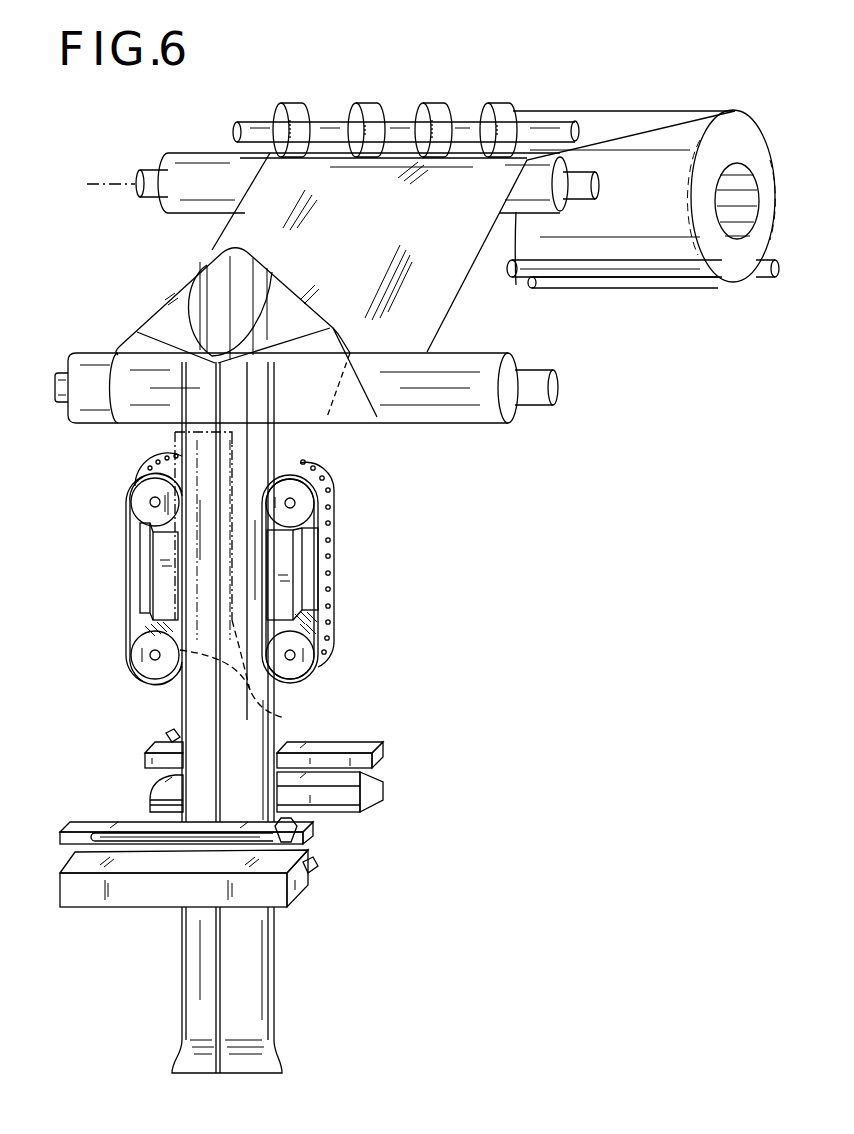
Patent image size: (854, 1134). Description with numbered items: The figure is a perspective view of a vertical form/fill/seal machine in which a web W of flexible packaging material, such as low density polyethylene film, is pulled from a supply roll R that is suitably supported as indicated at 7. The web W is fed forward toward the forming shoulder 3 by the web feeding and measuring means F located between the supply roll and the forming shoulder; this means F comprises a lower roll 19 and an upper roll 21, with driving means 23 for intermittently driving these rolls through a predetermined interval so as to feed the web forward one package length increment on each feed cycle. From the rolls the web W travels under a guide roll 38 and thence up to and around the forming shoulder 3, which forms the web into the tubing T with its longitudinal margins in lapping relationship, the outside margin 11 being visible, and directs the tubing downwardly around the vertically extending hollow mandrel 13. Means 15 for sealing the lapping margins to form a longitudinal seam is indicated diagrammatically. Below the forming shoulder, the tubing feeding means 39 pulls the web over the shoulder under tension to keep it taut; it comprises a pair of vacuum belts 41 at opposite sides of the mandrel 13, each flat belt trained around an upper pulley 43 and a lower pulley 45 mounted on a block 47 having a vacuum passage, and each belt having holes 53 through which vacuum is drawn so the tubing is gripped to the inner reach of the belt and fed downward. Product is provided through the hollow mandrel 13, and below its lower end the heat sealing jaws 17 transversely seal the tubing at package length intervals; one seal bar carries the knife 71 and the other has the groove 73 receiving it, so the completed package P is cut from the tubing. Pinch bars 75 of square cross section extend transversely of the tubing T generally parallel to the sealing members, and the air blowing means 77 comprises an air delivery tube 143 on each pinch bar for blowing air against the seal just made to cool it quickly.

The forming shoulder 3 is at (118, 340).
The supply roll support 7 is at (718, 278).
The longitudinal margin 11 is at (202, 413).
The hollow mandrel 13 is at (282, 711).
The longitudinal sealing means 15 is at (175, 436).
The heat sealing jaws 17 is at (130, 907).
The lower roll 19 is at (215, 213).
The upper roll 21 is at (274, 112).
The driving means 23 is at (129, 198).
The guide roll 38 is at (515, 423).
The tubing feeding means 39 is at (119, 600).
The vacuum belt 41 is at (120, 638).
The upper pulley 43 is at (148, 494).
The lower pulley 45 is at (145, 669).
The block 47 is at (148, 548).
The belt holes 53 is at (331, 637).
The knife 71 is at (368, 800).
The groove 73 is at (307, 868).
The pinch bar 75 is at (353, 748).
The air blowing means 77 is at (80, 843).
The air delivery tube 143 is at (170, 843).
The web feeding and measuring means F is at (380, 96).
The web W is at (428, 327).
The supply roll R is at (731, 135).
The tubing T is at (176, 723).
The package P is at (277, 987).